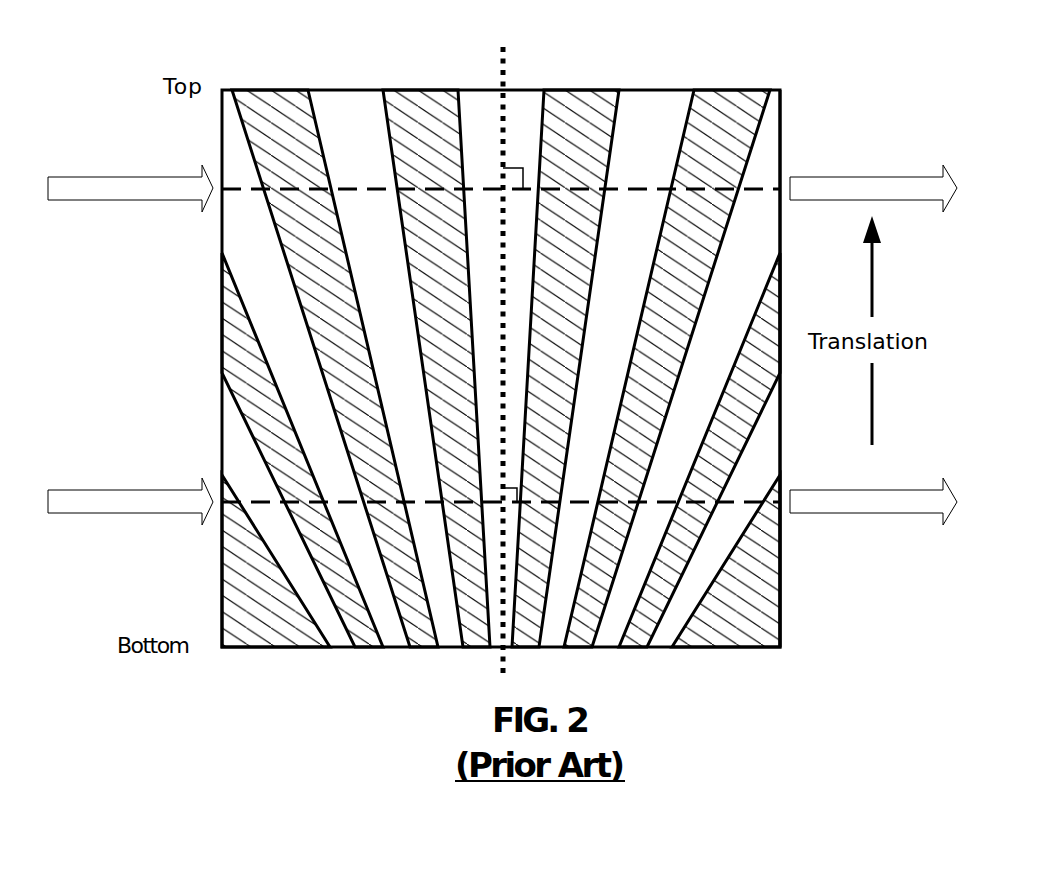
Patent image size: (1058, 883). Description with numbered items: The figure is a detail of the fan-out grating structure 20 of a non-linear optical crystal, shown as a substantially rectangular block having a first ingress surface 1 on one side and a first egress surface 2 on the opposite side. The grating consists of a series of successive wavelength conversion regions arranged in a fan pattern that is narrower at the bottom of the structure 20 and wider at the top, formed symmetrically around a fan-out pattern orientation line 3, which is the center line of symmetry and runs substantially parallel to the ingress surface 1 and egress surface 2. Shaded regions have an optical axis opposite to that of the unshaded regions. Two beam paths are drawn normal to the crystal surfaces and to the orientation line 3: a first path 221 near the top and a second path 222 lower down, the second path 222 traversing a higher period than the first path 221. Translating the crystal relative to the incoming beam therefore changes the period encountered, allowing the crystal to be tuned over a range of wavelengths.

The first ingress surface 1 is at (222, 152).
The first egress surface 2 is at (782, 437).
The fan-out pattern orientation line 3 is at (505, 68).
The fan-out grating structure 20 is at (781, 583).
The first path 221 is at (232, 199).
The second path 222 is at (260, 495).